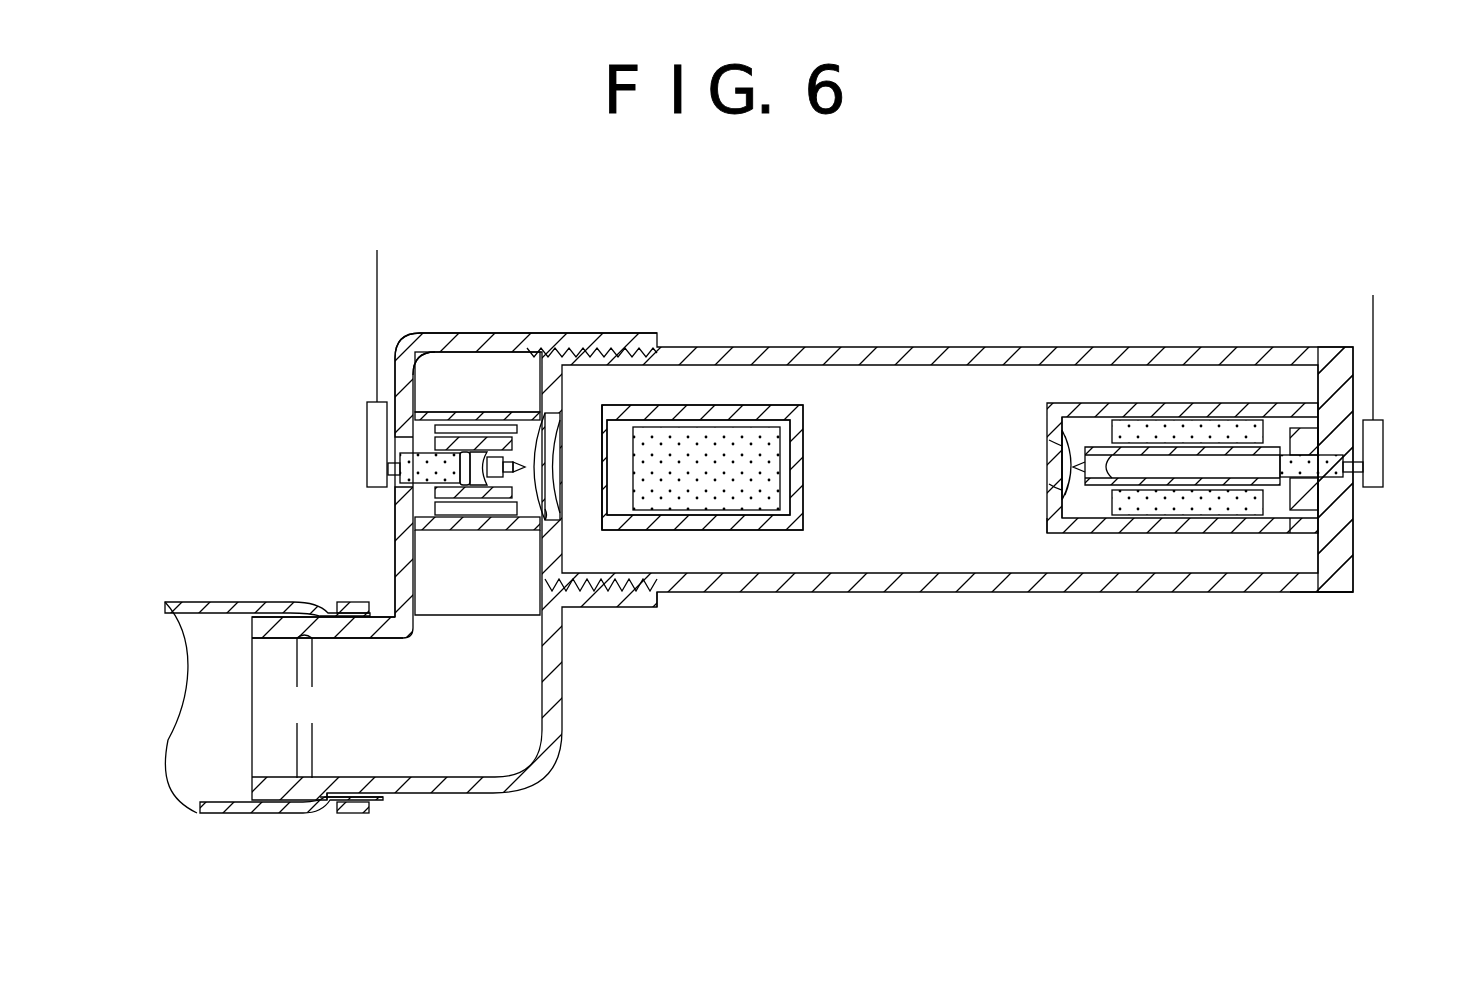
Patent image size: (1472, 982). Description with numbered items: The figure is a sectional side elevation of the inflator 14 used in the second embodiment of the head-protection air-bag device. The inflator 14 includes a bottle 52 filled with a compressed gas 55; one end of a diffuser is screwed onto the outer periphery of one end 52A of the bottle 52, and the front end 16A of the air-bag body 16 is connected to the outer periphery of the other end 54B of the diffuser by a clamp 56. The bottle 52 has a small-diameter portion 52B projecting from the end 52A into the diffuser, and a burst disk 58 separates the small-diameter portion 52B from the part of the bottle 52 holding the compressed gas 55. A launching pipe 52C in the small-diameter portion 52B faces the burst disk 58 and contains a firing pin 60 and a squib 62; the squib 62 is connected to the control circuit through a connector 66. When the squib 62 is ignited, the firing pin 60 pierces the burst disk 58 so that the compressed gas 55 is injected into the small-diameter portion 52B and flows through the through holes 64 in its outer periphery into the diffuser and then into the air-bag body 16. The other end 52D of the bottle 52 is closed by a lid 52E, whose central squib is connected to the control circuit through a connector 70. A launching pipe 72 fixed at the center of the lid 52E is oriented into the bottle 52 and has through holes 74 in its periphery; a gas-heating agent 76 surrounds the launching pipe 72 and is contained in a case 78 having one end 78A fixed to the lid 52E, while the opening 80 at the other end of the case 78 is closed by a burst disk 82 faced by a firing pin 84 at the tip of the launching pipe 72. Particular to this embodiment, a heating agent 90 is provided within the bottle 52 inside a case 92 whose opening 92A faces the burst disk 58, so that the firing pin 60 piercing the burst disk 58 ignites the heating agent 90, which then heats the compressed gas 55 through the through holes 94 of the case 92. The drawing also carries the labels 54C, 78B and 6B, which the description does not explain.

The inflator 14 is at (926, 288).
The air-bag body 16 is at (231, 580).
The front end of the air-bag body 16A is at (330, 600).
The bottle 52 is at (815, 348).
The one end of the bottle 52A is at (633, 608).
The small-diameter portion 52B is at (440, 417).
The launching pipe 52C is at (470, 527).
The other end of the bottle 52D is at (1313, 593).
The lid 52E is at (1357, 548).
The other end of the diffuser 54B is at (358, 790).
The upper threaded portion 54C is at (598, 335).
The compressed gas 55 is at (903, 553).
The clamp 56 is at (352, 808).
The burst disk 58 is at (548, 495).
The firing pin 60 is at (535, 437).
The squib 62 is at (395, 490).
The through holes 64 is at (497, 413).
The connector 66 is at (367, 457).
The connector 70 is at (1383, 447).
The launching pipe 72 is at (1095, 465).
The through holes 74 is at (1220, 423).
The gas-heating agent 76 is at (1140, 533).
The case 78 is at (1197, 548).
The one end of the case 78A is at (1293, 535).
The motor end 78B is at (1030, 533).
The opening 80 is at (1049, 442).
The burst disk 82 is at (1049, 482).
The firing pin 84 is at (1064, 430).
The heating agent 90 is at (767, 465).
The case 92 is at (700, 405).
The opening 92A is at (598, 420).
The through holes 94 is at (748, 405).
The connector 6B is at (1310, 480).